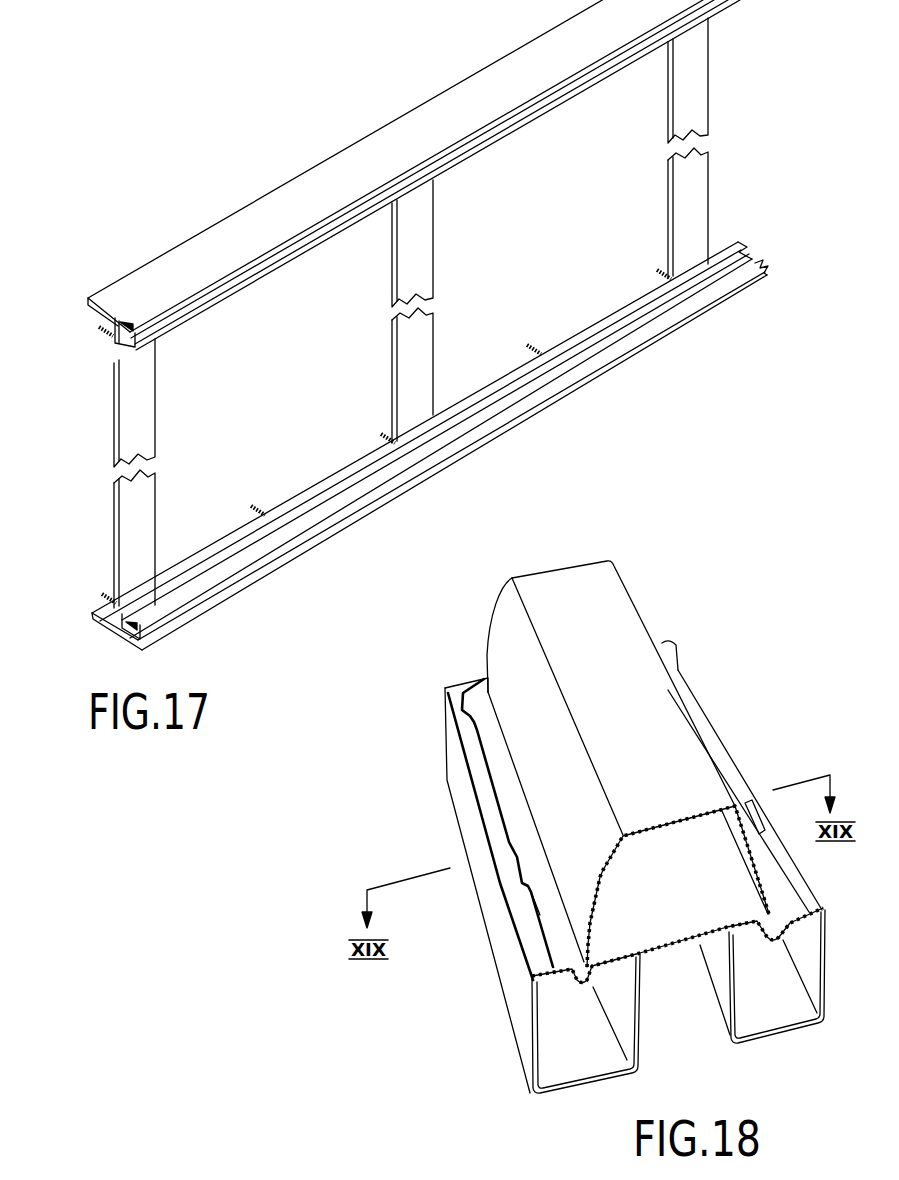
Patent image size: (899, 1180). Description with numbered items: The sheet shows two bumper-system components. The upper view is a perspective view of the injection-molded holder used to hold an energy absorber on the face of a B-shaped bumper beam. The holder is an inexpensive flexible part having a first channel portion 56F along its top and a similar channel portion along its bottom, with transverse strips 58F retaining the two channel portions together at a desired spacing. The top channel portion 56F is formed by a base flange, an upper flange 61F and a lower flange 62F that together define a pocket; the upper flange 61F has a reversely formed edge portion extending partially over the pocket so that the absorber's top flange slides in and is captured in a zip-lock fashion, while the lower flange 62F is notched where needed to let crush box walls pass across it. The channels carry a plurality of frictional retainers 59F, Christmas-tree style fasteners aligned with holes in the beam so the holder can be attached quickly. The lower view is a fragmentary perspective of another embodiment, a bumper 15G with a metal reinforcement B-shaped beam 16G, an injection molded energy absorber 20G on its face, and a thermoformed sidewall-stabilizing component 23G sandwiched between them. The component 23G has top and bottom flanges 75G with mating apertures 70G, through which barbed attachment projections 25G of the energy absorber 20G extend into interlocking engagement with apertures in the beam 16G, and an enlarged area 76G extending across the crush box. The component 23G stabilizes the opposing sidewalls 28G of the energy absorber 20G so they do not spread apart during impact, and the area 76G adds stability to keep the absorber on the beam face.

In FIG. 17, the first channel portion 56F is at (158, 259).
In FIG. 17, the upper flange 61F is at (230, 229).
In FIG. 17, the lower flange 62F is at (213, 293).
In FIG. 17, the transverse strips 58F is at (698, 68).
In FIG. 17, the frictional retainers 59F is at (662, 267).
In FIG. 18, the bumper 15G is at (714, 630).
In FIG. 18, the energy absorber 20G is at (489, 631).
In FIG. 18, the sidewalls 28G is at (510, 652).
In FIG. 18, the top and bottom flanges 75G is at (723, 750).
In FIG. 18, the area 76G is at (736, 876).
In FIG. 18, the beam 16G is at (518, 1033).
In FIG. 18, the sidewall-stabilizing component 23G is at (522, 962).
In FIG. 18, the apertures 70G is at (560, 902).
In FIG. 18, the attachment projections 25G is at (542, 893).